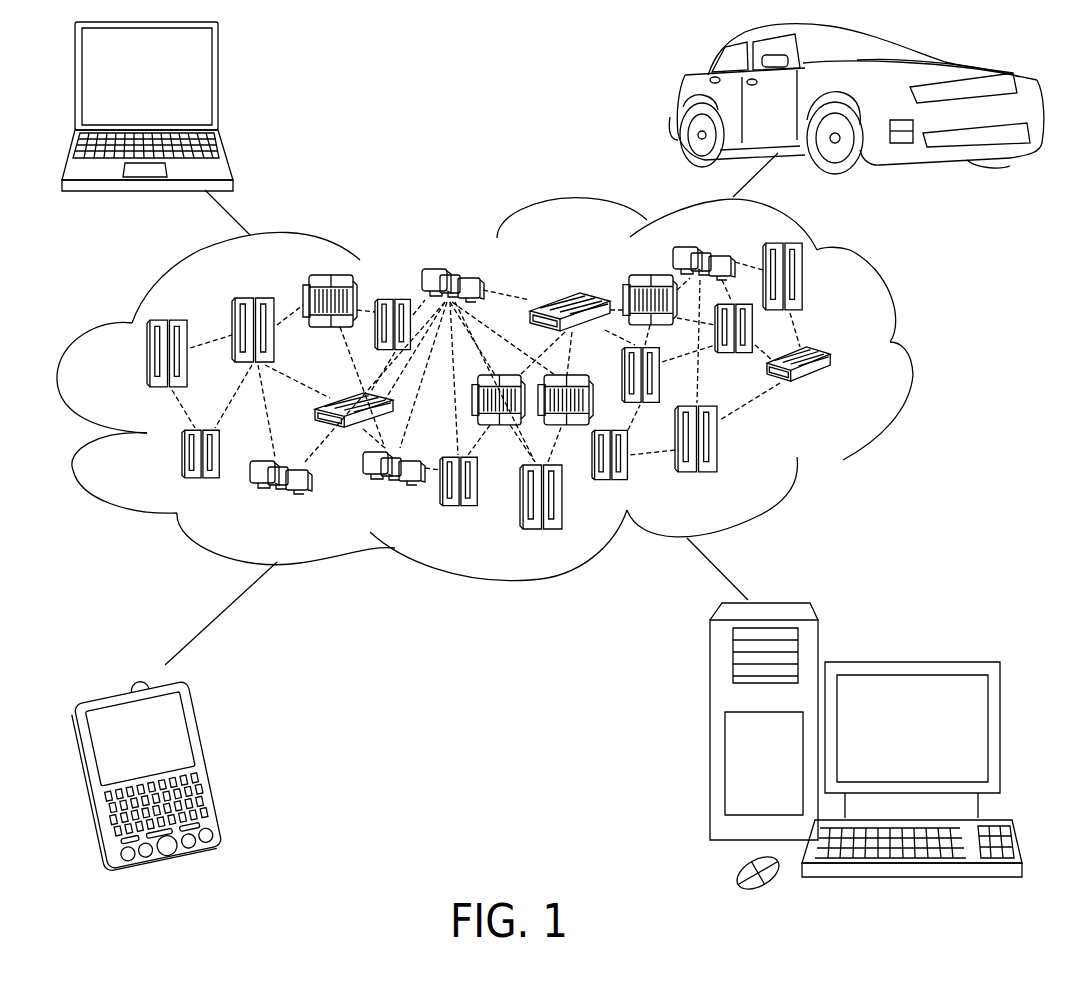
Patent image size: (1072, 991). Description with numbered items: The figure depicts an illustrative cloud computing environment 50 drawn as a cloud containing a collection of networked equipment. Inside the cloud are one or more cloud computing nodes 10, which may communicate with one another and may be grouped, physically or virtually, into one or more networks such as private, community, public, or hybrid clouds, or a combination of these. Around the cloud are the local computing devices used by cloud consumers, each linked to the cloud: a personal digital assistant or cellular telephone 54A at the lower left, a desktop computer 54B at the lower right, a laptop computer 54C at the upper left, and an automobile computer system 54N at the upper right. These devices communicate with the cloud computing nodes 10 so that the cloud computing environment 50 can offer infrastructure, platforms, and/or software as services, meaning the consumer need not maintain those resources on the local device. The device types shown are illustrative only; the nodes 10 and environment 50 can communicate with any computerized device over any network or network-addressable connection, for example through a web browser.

The cloud computing nodes 10 is at (852, 399).
The cloud computing environment 50 is at (913, 365).
The personal digital assistant (PDA) or cellular telephone 54A is at (205, 756).
The desktop computer 54B is at (907, 660).
The laptop computer 54C is at (220, 82).
The automobile computer system 54N is at (676, 103).